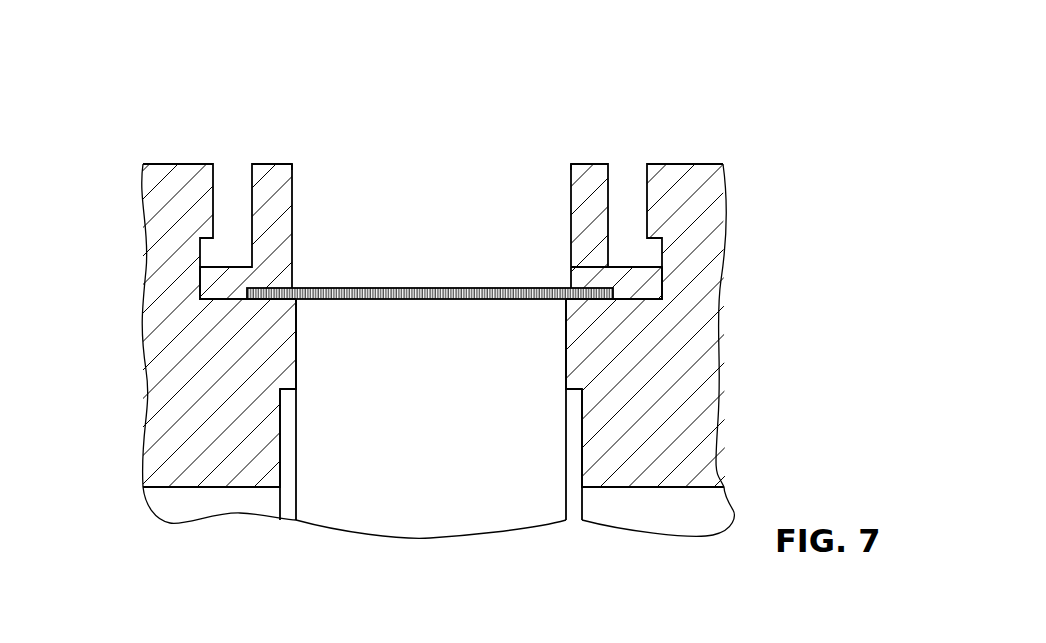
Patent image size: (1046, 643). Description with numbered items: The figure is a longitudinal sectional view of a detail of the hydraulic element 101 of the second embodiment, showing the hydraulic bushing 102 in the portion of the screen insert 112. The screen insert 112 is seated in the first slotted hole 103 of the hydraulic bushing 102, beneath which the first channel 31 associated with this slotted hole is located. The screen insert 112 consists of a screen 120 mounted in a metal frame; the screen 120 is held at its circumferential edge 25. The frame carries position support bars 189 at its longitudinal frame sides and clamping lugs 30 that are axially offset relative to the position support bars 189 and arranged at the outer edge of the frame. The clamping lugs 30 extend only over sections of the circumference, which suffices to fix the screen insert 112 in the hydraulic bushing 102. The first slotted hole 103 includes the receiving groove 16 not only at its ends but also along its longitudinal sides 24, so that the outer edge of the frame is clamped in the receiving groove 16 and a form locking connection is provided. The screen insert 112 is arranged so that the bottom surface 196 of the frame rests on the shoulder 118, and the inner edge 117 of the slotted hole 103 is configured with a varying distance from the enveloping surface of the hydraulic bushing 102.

The hydraulic element 101 is at (523, 274).
The hydraulic bushing 102 is at (164, 150).
The screen insert 112 is at (586, 150).
The first slotted hole 103 is at (484, 174).
The longitudinal side 24 is at (213, 164).
The clamping lug 30 is at (229, 265).
The position support bar 189 is at (270, 164).
The screen 120 is at (422, 287).
The receiving groove 16 is at (677, 252).
The circumferential edge 25 is at (664, 298).
The inner edge 117 is at (200, 263).
The shoulder 118 is at (262, 313).
The bottom surface 196 is at (613, 304).
The first channel 31 is at (438, 458).